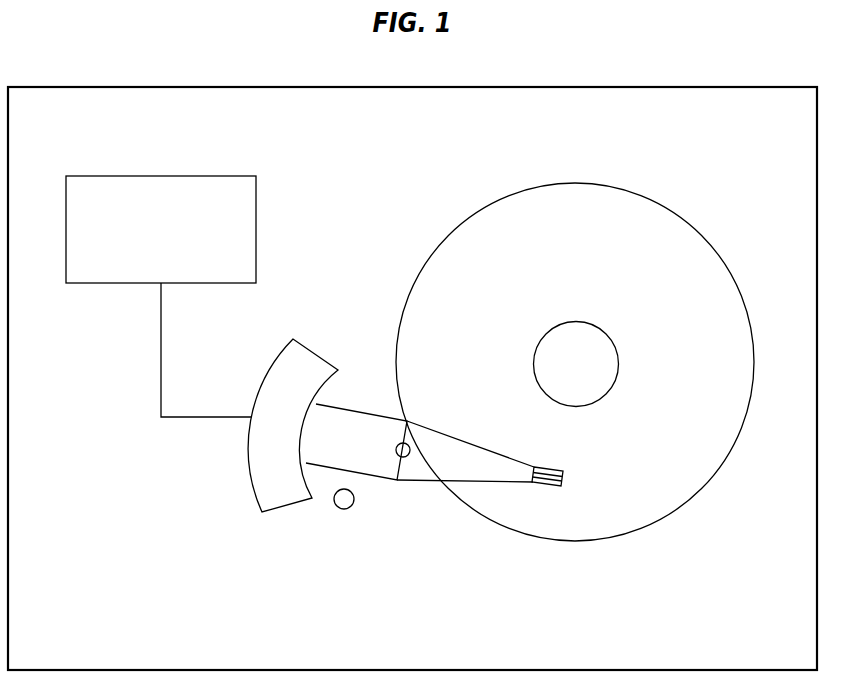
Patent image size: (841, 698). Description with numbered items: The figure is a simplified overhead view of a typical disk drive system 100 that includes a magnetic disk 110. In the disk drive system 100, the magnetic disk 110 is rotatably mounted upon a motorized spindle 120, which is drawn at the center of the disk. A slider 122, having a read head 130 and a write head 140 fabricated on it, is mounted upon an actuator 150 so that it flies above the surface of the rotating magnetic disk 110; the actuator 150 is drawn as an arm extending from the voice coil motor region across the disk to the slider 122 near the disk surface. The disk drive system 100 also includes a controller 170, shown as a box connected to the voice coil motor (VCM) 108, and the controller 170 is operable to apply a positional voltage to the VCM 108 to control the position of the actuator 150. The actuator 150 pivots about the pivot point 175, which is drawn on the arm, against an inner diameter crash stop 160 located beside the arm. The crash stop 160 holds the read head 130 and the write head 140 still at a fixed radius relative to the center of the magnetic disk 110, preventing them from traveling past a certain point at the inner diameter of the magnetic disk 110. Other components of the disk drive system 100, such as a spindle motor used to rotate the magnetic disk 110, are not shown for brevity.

The disk drive system 100 is at (396, 148).
The controller 170 is at (178, 260).
The magnetic disk 110 is at (560, 261).
The spindle 120 is at (618, 362).
The voice coil motor 108 is at (276, 513).
The actuator 150 is at (384, 483).
The pivot point 175 is at (397, 446).
The crash stop 160 is at (345, 509).
The slider 122 is at (566, 480).
The read head 130 is at (565, 468).
The write head 140 is at (552, 487).